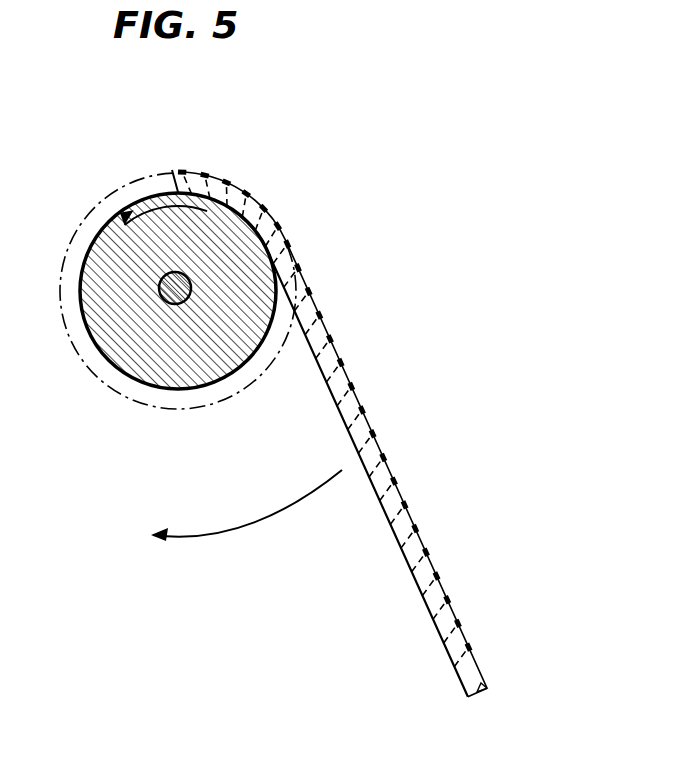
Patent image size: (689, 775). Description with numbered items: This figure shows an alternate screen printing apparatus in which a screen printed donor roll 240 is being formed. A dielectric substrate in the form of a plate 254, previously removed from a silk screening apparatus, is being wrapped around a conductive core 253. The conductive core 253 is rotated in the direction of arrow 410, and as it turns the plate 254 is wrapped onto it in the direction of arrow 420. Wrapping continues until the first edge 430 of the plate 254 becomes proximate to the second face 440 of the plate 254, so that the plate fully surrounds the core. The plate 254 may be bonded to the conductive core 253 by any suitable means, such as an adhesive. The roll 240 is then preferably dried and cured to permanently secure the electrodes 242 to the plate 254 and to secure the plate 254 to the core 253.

The donor roll 240 is at (255, 132).
The electrodes 242 is at (370, 423).
The conductive core 253 is at (120, 357).
The plate 254 is at (386, 521).
The arrow 410 is at (146, 216).
The arrow 420 is at (230, 532).
The first edge 430 is at (173, 171).
The second face 440 is at (477, 693).